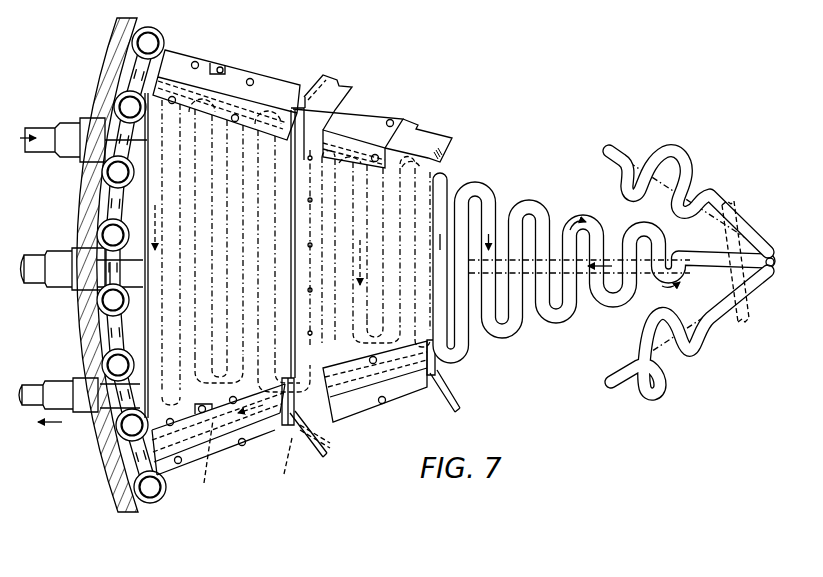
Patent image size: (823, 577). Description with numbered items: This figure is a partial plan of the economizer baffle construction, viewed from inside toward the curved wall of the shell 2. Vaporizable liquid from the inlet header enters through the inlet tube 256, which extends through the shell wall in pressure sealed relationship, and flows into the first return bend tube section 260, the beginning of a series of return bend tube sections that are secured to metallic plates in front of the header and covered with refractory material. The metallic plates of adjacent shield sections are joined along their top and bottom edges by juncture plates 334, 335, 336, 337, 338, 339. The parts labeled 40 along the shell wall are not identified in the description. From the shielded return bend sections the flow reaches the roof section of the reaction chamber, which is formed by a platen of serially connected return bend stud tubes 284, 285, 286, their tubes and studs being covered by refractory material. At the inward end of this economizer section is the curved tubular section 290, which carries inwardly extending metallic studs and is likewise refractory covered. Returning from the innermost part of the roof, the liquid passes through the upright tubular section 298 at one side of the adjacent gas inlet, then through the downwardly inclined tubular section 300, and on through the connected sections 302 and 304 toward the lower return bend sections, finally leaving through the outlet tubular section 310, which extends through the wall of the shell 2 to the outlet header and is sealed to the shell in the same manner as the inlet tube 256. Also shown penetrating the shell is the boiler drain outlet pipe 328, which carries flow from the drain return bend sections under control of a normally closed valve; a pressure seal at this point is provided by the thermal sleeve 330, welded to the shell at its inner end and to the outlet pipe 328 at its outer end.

The shell 2 is at (102, 473).
The collector tubes 40 is at (157, 32).
The inlet tube 256 is at (33, 128).
The return bend tube section 260 is at (160, 140).
The return bend stud tube 284 is at (463, 218).
The return bend stud tube 285 is at (598, 250).
The return bend stud tube 286 is at (663, 283).
The curved tubular section 290 is at (773, 262).
The upright tubular section 298 is at (470, 347).
The downwardly inclined tubular section 300 is at (323, 420).
The connected tubular section 302 is at (285, 438).
The connected tubular section 304 is at (210, 464).
The outlet tubular section 310 is at (28, 387).
The outlet pipe 328 is at (100, 268).
The thermal sleeve 330 is at (52, 278).
The juncture plate 334 is at (368, 403).
The juncture plate 335 is at (316, 459).
The juncture plate 336 is at (257, 440).
The juncture plate 337 is at (431, 130).
The juncture plate 338 is at (312, 84).
The juncture plate 339 is at (237, 75).